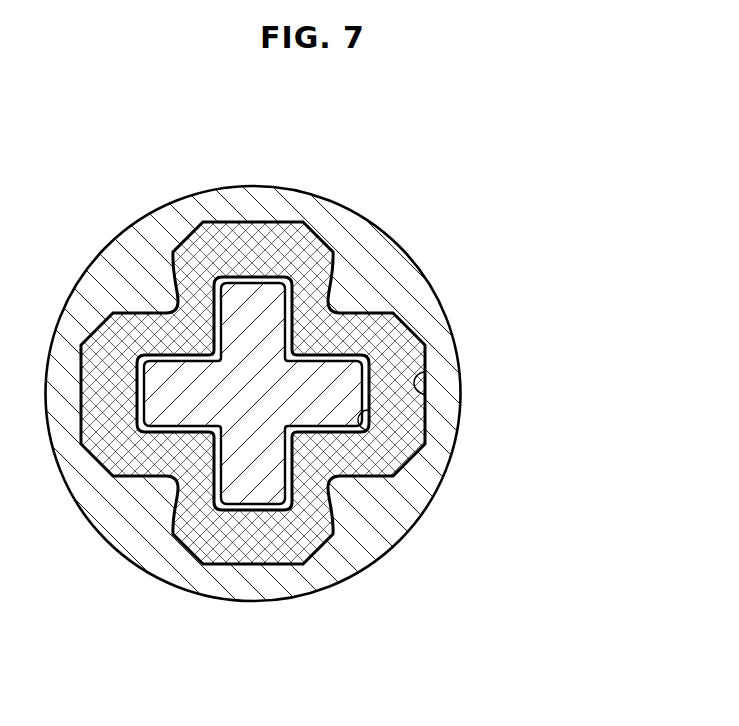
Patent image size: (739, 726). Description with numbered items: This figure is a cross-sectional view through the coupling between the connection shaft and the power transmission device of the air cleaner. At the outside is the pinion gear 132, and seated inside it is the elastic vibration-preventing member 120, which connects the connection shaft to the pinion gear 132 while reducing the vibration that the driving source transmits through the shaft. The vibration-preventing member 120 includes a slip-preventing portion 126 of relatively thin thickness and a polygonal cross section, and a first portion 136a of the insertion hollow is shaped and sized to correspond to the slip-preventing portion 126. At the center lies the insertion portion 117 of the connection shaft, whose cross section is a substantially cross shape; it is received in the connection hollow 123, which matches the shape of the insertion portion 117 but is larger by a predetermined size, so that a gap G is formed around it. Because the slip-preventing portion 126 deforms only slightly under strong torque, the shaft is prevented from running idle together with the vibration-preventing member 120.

The pinion gear 132 is at (378, 263).
The slip-preventing portion 126 is at (412, 324).
The vibration-preventing member 120 is at (369, 393).
The first portion of the insertion hollow 136a is at (423, 396).
The connection hollow 123 is at (360, 432).
The insertion portion 117 is at (255, 483).
The gap G is at (286, 398).